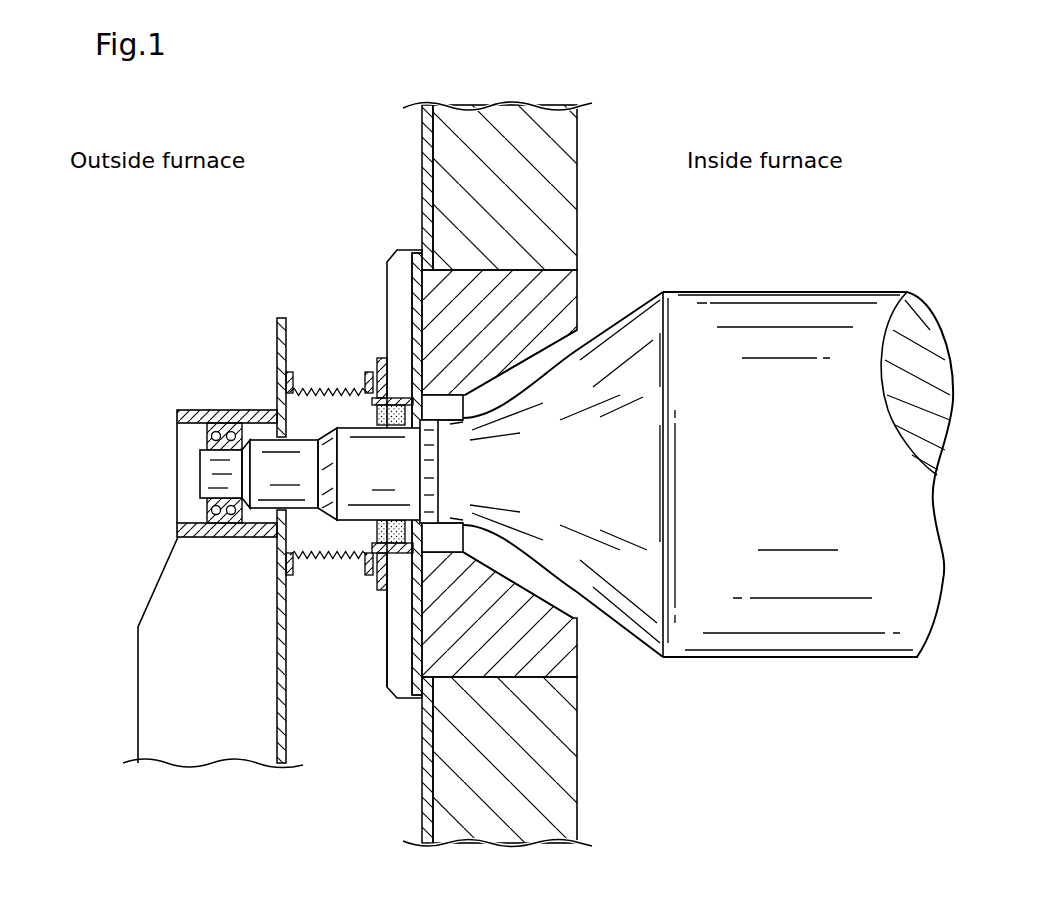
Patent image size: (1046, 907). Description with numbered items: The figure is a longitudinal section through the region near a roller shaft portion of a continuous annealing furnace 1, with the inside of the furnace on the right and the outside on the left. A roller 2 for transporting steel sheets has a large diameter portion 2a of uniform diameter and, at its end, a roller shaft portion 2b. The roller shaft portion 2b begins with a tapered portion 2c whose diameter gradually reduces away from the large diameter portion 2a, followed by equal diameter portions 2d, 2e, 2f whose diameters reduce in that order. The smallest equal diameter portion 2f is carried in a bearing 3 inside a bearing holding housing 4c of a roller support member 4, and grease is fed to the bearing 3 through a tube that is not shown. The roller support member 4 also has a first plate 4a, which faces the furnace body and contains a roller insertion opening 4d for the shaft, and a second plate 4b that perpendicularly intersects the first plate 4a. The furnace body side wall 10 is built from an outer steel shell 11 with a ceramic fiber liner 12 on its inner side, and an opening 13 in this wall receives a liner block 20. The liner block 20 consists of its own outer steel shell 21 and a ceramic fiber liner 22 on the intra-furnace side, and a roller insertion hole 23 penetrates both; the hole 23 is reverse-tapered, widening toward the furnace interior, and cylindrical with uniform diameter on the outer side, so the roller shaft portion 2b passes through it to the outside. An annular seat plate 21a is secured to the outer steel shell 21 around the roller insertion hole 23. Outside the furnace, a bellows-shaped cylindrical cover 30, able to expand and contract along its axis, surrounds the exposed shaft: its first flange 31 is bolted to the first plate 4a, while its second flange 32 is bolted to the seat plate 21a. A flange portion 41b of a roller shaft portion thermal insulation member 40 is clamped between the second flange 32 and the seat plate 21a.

The continuous annealing furnace 1 is at (365, 92).
The roller 2 is at (532, 421).
The large diameter portion 2a is at (855, 310).
The roller shaft portion 2b is at (602, 322).
The tapered portion 2c is at (608, 470).
The equal diameter portion 2d is at (440, 470).
The equal diameter portion 2e is at (318, 470).
The equal diameter portion 2f is at (200, 468).
The bearing 3 is at (207, 432).
The roller support member 4 is at (197, 580).
The first plate 4a is at (287, 708).
The second plate 4b is at (180, 752).
The bearing holding housing 4c is at (192, 410).
The roller insertion opening 4d is at (290, 437).
The furnace body side wall 10 is at (490, 474).
The outer steel shell 11 is at (422, 203).
The ceramic fiber liner 12 is at (562, 145).
The opening 13 is at (515, 263).
The liner block 20 is at (348, 466).
The outer steel shell 21 is at (387, 318).
The seat plate 21a is at (373, 590).
The ceramic fiber liner 22 is at (535, 451).
The roller insertion hole 23 is at (522, 358).
The cylindrical cover 30 is at (329, 514).
The first flange 31 is at (293, 575).
The second flange 32 is at (325, 565).
The roller shaft portion thermal insulation member 40 is at (353, 456).
The flange portion 41b is at (377, 368).